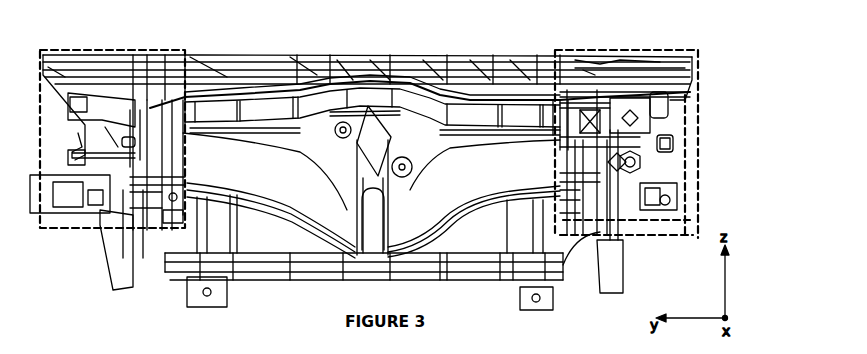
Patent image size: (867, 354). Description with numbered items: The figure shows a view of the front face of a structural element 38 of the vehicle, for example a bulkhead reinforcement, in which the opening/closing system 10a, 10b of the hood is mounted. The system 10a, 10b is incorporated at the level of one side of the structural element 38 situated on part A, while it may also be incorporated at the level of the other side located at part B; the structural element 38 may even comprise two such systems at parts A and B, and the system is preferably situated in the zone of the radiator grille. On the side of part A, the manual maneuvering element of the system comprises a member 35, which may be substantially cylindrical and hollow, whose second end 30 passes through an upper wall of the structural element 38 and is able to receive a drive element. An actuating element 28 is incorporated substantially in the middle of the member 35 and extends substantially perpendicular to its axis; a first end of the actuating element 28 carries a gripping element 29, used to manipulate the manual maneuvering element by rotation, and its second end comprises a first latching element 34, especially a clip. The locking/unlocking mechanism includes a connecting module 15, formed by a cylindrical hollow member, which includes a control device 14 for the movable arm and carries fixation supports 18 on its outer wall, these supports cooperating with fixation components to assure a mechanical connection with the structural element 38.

The opening/closing system 10a is at (685, 89).
The opening/closing system 10b is at (685, 89).
The control device 14 is at (645, 165).
The connecting module 15 is at (625, 157).
The fixation support 18 is at (613, 165).
The actuating element 28 is at (648, 134).
The gripping element 29 is at (674, 143).
The second end 30 is at (586, 66).
The first latching element 34 is at (565, 150).
The member 35 is at (590, 185).
The structural element 38 is at (74, 335).
The part A is at (665, 52).
The part B is at (149, 48).